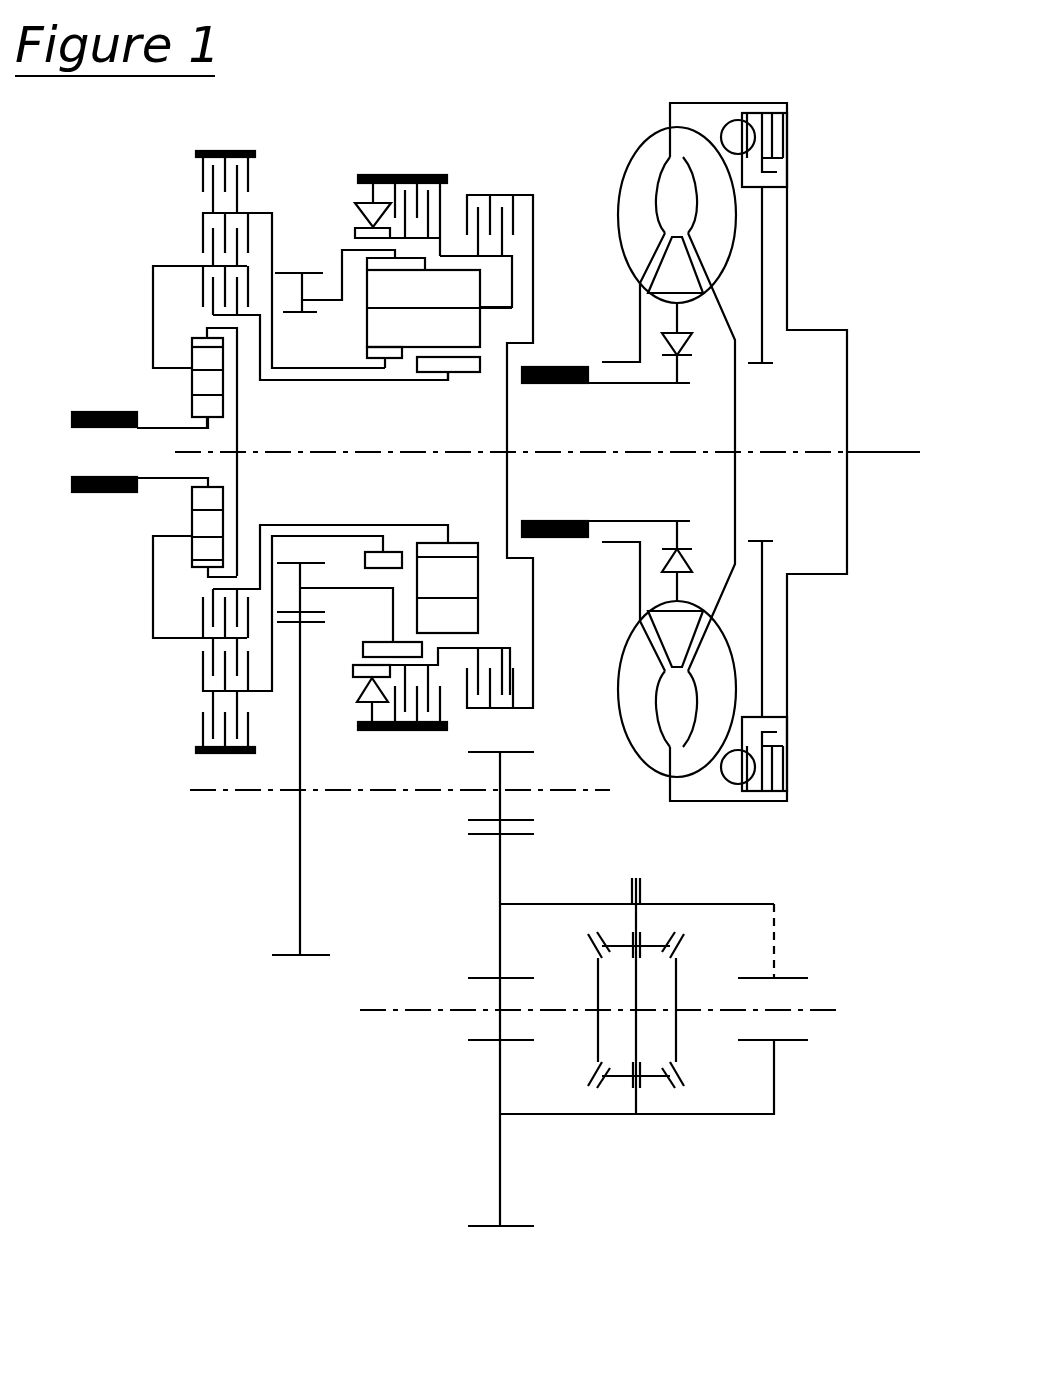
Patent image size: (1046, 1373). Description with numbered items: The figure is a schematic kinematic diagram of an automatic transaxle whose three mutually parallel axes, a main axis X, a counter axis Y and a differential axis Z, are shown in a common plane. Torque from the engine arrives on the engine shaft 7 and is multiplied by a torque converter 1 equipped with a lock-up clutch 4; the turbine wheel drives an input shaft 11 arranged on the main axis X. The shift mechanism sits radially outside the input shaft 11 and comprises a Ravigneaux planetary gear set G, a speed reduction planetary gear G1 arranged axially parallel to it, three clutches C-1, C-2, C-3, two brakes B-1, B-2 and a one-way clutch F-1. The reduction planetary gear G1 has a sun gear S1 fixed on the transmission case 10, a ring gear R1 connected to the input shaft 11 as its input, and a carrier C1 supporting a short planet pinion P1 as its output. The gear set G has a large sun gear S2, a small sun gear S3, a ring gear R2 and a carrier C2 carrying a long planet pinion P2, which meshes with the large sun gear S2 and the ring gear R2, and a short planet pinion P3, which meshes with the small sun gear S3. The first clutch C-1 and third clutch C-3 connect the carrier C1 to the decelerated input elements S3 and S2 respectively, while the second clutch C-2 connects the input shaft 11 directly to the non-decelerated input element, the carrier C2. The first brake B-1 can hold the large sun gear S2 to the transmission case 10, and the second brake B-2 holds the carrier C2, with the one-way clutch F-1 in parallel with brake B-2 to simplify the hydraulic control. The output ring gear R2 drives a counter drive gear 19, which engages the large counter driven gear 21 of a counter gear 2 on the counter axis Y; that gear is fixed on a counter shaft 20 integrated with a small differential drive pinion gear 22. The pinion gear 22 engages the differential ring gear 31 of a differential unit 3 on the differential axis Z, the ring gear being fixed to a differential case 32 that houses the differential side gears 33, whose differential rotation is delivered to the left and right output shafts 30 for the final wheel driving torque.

The torque converter 1 is at (648, 117).
The counter gear 2 is at (528, 801).
The differential unit 3 is at (680, 883).
The lock-up clutch 4 is at (790, 137).
The engine shaft 7 is at (880, 450).
The transmission case 10 is at (216, 152).
The input shaft 11 is at (338, 455).
The counter drive gear 19 is at (290, 612).
The counter shaft 20 is at (430, 792).
The counter driven gear 21 is at (299, 820).
The differential drive pinion gear 22 is at (504, 774).
The output shafts 30 is at (395, 1015).
The differential ring gear 31 is at (492, 860).
The differential case 32 is at (548, 903).
The differential side gears 33 is at (678, 978).
The first brake B-1 is at (250, 180).
The second brake B-2 is at (443, 200).
The first clutch C-1 is at (203, 280).
The second clutch C-2 is at (487, 196).
The third clutch C-3 is at (202, 232).
The carrier C1 is at (175, 535).
The carrier C2 is at (500, 310).
The one-way clutch F-1 is at (357, 213).
The planetary gear set G is at (490, 293).
The speed reduction planetary gear G1 is at (183, 587).
The short planet pinion P1 is at (192, 370).
The long planet pinion P2 is at (367, 290).
The short planet pinion P3 is at (460, 617).
The ring gear R1 is at (192, 344).
The ring gear R2 is at (375, 262).
The sun gear S1 is at (192, 406).
The large diameter sun gear S2 is at (388, 352).
The small sun gear S3 is at (470, 548).
The main axis X is at (531, 452).
The counter axis Y is at (399, 789).
The differential axis Z is at (600, 1011).